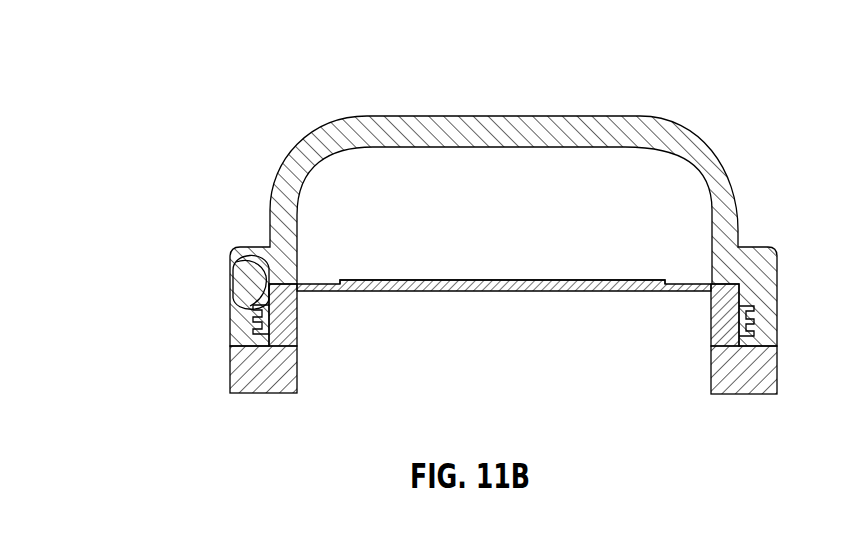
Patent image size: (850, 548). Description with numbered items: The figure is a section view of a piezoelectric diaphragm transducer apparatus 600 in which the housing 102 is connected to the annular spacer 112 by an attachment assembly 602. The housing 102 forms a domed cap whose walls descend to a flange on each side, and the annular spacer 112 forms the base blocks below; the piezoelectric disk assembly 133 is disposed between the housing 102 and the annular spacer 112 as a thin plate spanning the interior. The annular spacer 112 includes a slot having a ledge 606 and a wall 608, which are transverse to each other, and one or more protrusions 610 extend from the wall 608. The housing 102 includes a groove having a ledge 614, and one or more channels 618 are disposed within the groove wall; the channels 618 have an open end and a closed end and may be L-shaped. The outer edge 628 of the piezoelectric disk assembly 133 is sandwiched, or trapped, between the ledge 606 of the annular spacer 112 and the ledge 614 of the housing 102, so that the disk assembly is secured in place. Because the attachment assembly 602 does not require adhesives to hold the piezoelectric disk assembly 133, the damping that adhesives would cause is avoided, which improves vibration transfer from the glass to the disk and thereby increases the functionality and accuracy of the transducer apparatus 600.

The piezoelectric diaphragm transducer apparatus 600 is at (722, 66).
The housing 102 is at (604, 116).
The piezoelectric disk assembly 133 is at (502, 240).
The attachment assembly 602 is at (200, 327).
The annular spacer 112 is at (711, 365).
The ledge 614 is at (287, 282).
The ledge 606 is at (288, 288).
The outer edge 628 is at (290, 284).
The wall 608 is at (240, 262).
The protrusions 610 is at (246, 290).
The channels 618 is at (252, 308).